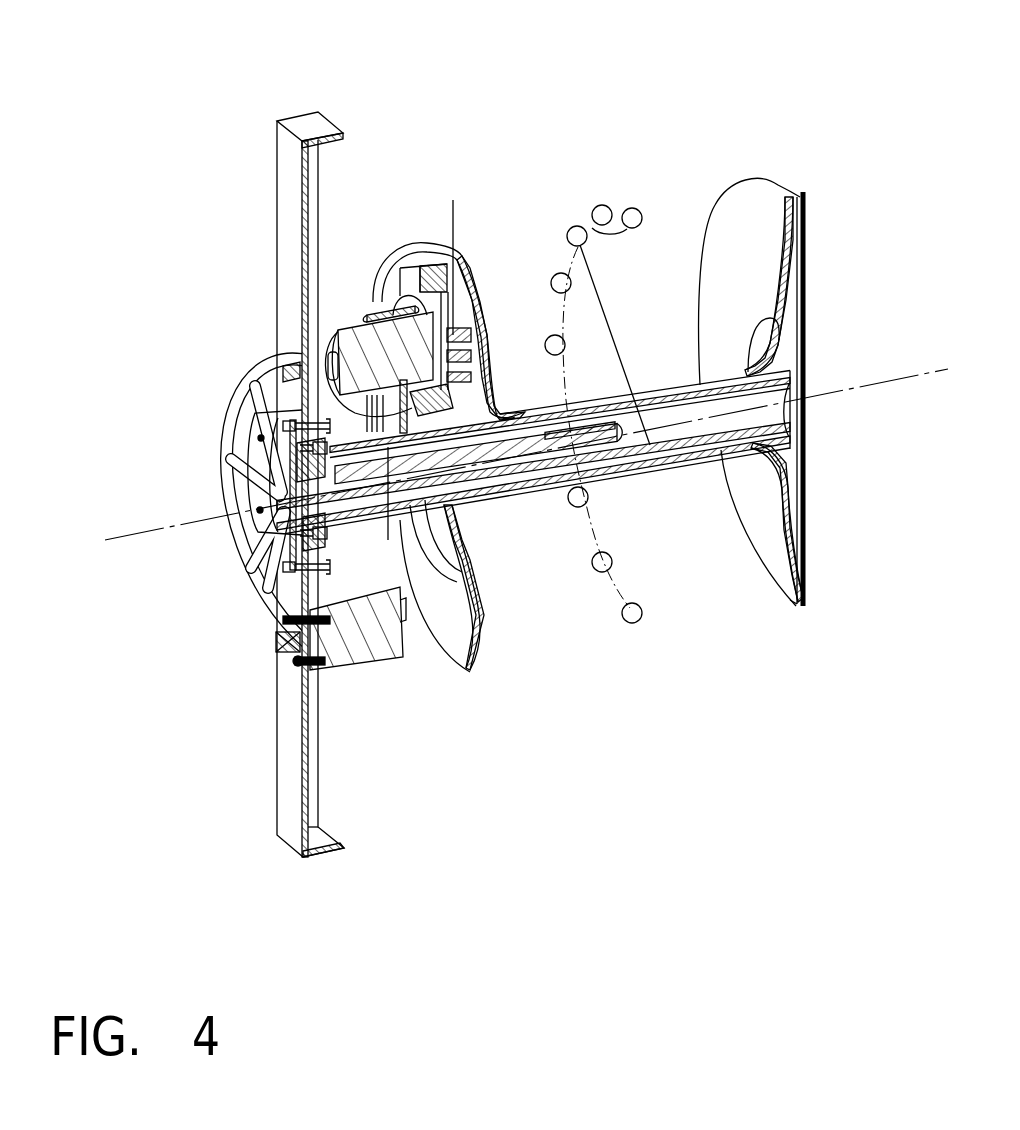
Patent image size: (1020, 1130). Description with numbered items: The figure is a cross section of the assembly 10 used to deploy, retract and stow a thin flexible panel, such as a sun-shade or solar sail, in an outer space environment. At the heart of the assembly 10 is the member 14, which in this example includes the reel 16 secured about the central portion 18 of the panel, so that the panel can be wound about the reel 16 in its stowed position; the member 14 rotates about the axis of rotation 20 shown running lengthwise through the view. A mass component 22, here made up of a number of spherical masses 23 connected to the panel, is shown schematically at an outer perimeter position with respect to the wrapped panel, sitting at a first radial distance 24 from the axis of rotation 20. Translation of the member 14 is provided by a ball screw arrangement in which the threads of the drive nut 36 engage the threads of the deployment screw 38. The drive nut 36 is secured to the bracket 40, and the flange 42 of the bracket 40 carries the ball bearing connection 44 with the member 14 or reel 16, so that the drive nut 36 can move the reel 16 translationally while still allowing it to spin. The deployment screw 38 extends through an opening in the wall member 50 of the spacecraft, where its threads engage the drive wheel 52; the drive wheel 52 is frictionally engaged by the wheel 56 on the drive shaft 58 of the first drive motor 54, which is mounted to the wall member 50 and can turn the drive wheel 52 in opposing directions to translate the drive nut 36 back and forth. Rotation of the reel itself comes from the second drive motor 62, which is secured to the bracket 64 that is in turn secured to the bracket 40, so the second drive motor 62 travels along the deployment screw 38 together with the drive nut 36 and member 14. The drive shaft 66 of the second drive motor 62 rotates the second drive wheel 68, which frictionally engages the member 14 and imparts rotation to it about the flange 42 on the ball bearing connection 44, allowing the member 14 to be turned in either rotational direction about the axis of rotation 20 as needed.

The assembly 10 is at (457, 112).
The member 14 is at (745, 205).
The reel 16 is at (768, 215).
The central portion 18 is at (650, 488).
The axis of rotation 20 is at (178, 522).
The mass component 22 is at (550, 272).
The spherical masses 23 is at (558, 290).
The first radial distance 24 is at (614, 330).
The drive nut 36 is at (293, 462).
The deployment screw 38 is at (505, 505).
The bracket 40 is at (388, 540).
The flange 42 is at (528, 496).
The ball bearing connection 44 is at (485, 368).
The wall member 50 is at (288, 190).
The drive wheel 52 is at (240, 380).
The first drive motor 54 is at (367, 640).
The wheel 56 is at (290, 640).
The drive shaft 58 is at (298, 668).
The second drive motor 62 is at (395, 335).
The bracket 64 is at (296, 362).
The drive shaft 66 is at (480, 300).
The second drive wheel 68 is at (453, 200).